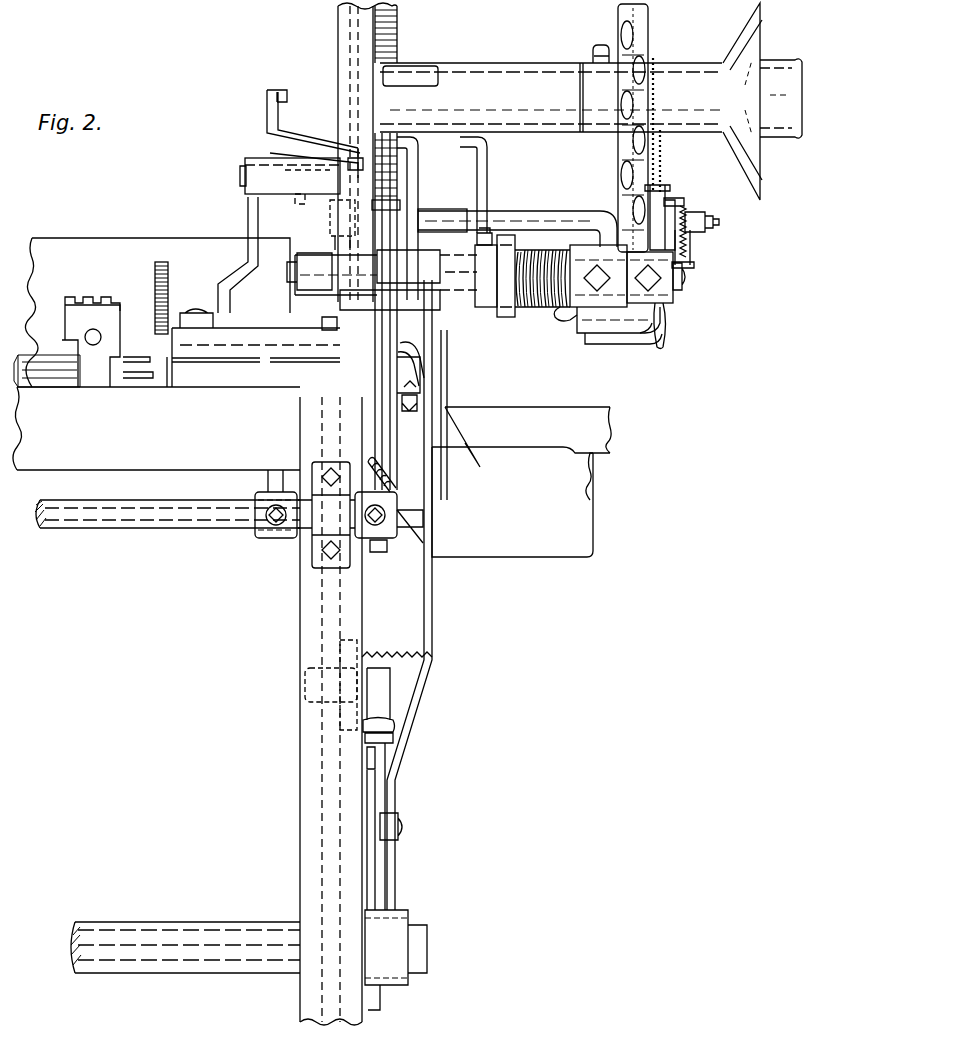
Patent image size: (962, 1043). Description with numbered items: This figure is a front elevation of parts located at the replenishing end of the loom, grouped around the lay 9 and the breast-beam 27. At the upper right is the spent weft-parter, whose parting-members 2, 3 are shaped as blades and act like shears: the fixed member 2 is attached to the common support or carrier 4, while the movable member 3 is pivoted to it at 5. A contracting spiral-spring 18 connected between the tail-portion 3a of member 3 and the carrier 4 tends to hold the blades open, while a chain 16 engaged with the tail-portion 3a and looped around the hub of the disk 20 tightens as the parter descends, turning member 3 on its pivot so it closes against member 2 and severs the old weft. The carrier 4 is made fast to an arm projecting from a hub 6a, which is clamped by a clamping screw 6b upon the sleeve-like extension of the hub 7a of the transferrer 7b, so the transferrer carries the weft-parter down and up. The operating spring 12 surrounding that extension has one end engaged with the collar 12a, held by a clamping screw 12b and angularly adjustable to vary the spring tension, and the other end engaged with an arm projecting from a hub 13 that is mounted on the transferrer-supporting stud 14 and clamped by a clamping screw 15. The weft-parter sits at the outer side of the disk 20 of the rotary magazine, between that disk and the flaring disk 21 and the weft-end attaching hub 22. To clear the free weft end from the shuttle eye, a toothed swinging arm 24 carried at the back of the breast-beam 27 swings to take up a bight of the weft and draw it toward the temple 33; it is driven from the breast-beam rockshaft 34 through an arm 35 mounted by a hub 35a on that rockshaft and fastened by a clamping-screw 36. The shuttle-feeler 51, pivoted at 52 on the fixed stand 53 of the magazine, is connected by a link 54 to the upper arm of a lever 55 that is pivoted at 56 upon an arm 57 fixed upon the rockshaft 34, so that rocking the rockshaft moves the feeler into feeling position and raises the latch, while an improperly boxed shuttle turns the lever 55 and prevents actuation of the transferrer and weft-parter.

The parting-member 2 is at (665, 340).
The parting-member 3 is at (655, 342).
The tail-portion 3a is at (662, 196).
The support or carrier 4 is at (688, 240).
The pivot 5 is at (713, 218).
The hub 6a is at (567, 306).
The clamping screw 6b is at (597, 270).
The hub of the transferrer 7a is at (432, 258).
The transferrer 7b is at (425, 212).
The lay 9 is at (125, 238).
The operating spring 12 is at (530, 306).
The collar 12a is at (503, 316).
The clamping screw 12b is at (482, 233).
The hub 13 is at (667, 303).
The transferrer-supporting stud 14 is at (682, 273).
The clamping screw 15 is at (660, 293).
The chain 16 is at (656, 156).
The contracting spiral-spring 18 is at (682, 200).
The disk 20 is at (648, 26).
The flaring disk 21 is at (748, 33).
The weft-end attaching hub 22 is at (773, 70).
The swinging arm 24 is at (168, 276).
The breast-beam 27 is at (213, 448).
The temple 33 is at (85, 328).
The breast-beam rockshaft 34 is at (208, 528).
The arm 35 is at (267, 480).
The hub 35a is at (282, 538).
The clamping-screw 36 is at (270, 524).
The shuttle-feeler 51 is at (248, 220).
The pivot 52 is at (240, 173).
The fixed stand 53 is at (340, 40).
The link 54 is at (290, 144).
The lever 55 is at (373, 207).
The pivot 56 is at (340, 300).
The arm 57 is at (397, 402).